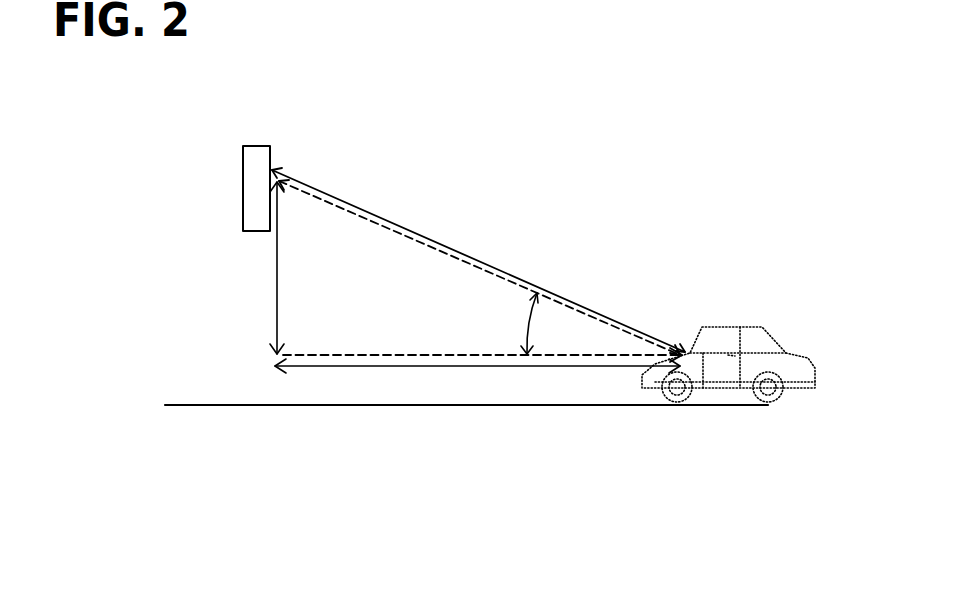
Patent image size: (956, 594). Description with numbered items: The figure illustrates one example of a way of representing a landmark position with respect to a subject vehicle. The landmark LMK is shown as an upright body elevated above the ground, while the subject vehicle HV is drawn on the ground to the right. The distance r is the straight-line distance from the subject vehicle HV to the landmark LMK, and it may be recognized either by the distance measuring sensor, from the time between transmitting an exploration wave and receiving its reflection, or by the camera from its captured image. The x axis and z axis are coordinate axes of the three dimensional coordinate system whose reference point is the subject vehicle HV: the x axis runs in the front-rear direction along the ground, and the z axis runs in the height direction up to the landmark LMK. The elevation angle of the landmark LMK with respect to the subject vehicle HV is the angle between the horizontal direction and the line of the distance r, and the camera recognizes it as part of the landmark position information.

The landmark LMK is at (262, 146).
The subject vehicle HV is at (748, 328).
The distance r is at (478, 261).
The z axis z is at (269, 268).
The x axis x is at (477, 380).